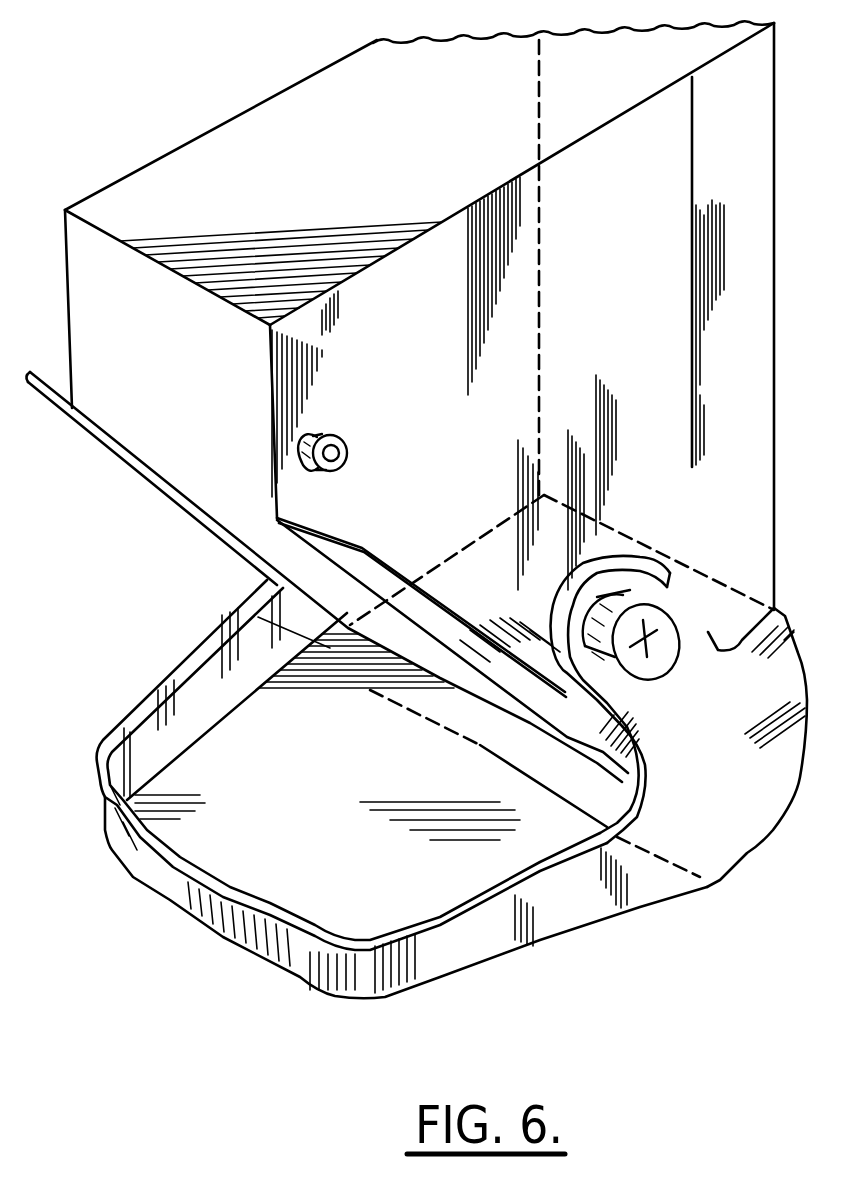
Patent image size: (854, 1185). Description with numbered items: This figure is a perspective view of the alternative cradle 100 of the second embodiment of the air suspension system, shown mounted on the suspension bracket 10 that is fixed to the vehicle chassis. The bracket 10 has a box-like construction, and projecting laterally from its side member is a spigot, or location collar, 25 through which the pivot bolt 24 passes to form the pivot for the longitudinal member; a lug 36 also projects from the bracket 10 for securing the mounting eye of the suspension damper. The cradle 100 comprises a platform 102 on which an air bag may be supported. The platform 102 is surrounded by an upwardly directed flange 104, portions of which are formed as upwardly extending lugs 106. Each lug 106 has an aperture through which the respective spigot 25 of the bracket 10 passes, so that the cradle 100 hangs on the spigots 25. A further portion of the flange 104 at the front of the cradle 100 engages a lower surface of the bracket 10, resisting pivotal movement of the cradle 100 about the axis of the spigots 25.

The suspension bracket 10 is at (126, 135).
The pivot bolt 24 is at (660, 647).
The spigot 25 is at (630, 587).
The lug 36 is at (323, 420).
The cradle 100 is at (615, 988).
The platform 102 is at (348, 777).
The flange 104 is at (123, 710).
The lug 106 is at (612, 607).